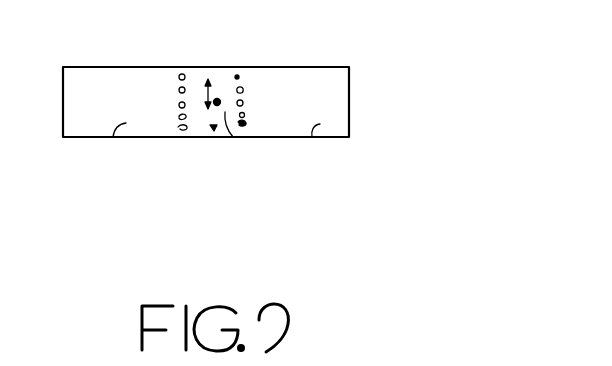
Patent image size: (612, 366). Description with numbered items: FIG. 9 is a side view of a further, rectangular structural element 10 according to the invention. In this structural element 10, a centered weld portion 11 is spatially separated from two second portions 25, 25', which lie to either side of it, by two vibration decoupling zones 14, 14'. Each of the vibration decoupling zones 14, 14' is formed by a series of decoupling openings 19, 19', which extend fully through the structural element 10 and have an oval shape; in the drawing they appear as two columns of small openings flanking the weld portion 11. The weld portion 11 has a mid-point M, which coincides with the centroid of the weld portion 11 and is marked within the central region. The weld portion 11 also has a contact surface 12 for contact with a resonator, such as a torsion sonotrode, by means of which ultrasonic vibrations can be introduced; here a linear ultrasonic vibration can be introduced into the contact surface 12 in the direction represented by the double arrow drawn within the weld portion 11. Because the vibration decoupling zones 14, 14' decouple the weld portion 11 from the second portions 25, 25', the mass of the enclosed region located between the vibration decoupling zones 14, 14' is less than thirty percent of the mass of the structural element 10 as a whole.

The structural element 10 is at (341, 108).
The weld portion 11 is at (213, 129).
The contact surface 12 is at (233, 137).
The vibration decoupling zone 14 is at (213, 68).
The vibration decoupling zone 14' is at (279, 66).
The decoupling opening 19 is at (183, 162).
The decoupling opening 19' is at (260, 164).
The second portion 25 is at (100, 168).
The second portion 25' is at (338, 169).
The mid-point M is at (243, 89).